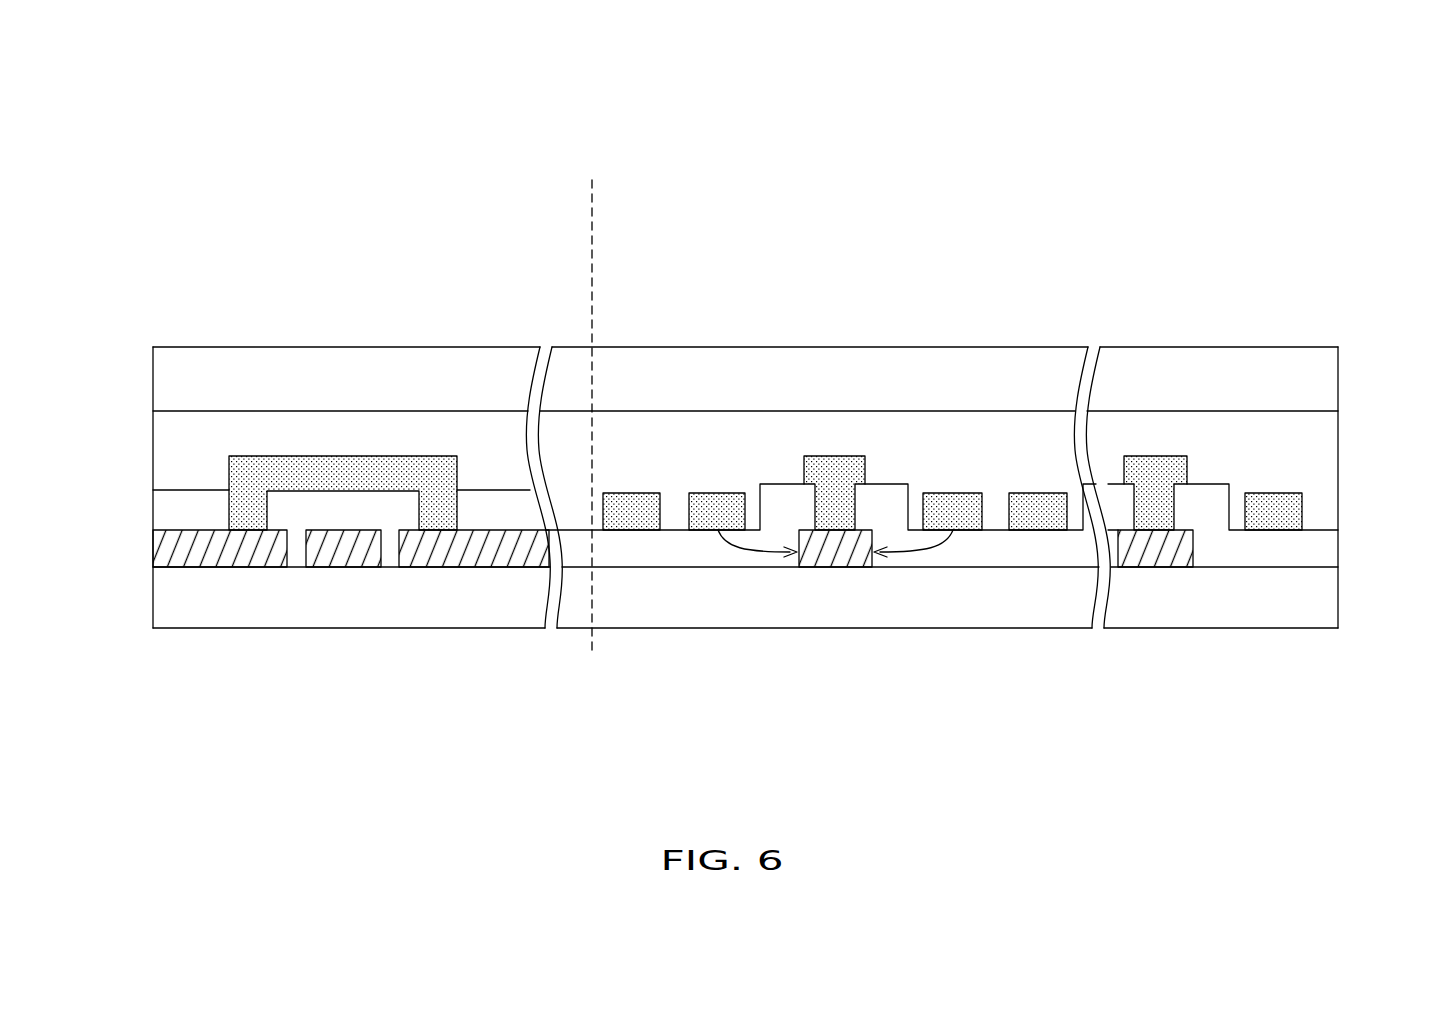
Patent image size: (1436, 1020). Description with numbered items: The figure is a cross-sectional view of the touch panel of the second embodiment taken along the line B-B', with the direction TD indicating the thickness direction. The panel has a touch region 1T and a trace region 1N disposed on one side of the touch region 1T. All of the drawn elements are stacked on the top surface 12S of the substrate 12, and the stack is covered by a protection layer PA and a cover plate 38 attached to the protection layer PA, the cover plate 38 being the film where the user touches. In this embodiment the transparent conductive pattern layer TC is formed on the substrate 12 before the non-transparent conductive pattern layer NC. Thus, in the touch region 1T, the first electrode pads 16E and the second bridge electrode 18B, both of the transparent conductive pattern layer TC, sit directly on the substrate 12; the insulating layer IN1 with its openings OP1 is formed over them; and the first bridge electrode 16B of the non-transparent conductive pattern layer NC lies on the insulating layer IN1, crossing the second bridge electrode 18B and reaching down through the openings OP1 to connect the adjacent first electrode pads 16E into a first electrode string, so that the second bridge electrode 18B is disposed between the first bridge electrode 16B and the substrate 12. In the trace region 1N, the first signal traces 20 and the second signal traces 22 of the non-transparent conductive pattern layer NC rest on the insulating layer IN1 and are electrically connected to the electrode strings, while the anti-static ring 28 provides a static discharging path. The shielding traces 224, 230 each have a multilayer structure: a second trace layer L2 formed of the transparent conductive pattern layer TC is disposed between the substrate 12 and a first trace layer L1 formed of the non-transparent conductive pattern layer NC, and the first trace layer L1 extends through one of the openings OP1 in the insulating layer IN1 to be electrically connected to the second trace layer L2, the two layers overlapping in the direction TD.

The cover plate 38 is at (269, 395).
The substrate 12 is at (269, 611).
The first bridge electrode 16B is at (247, 473).
The first electrode pad 16E is at (180, 548).
The second bridge electrode 18B is at (340, 547).
The opening OP1 is at (472, 502).
The first signal trace 20 is at (625, 510).
The top surface 12S is at (762, 567).
The second signal trace 22 is at (962, 515).
The shielding trace 224 is at (878, 295).
The shielding trace 230 is at (1198, 295).
The first trace layer L1 is at (818, 468).
The second trace layer L2 is at (838, 520).
The transparent conductive pattern layer TC is at (1205, 542).
The anti-static ring 28 is at (1283, 517).
The protection layer PA is at (1310, 448).
The non-transparent conductive pattern layer NC is at (1308, 502).
The insulating layer IN1 is at (1310, 548).
The touch region 1T is at (152, 207).
The trace region 1N is at (1338, 207).
The line B-B' B is at (1338, 93).
The direction TD is at (58, 707).